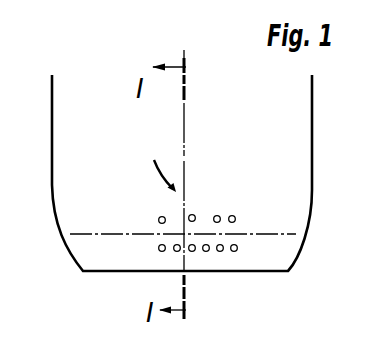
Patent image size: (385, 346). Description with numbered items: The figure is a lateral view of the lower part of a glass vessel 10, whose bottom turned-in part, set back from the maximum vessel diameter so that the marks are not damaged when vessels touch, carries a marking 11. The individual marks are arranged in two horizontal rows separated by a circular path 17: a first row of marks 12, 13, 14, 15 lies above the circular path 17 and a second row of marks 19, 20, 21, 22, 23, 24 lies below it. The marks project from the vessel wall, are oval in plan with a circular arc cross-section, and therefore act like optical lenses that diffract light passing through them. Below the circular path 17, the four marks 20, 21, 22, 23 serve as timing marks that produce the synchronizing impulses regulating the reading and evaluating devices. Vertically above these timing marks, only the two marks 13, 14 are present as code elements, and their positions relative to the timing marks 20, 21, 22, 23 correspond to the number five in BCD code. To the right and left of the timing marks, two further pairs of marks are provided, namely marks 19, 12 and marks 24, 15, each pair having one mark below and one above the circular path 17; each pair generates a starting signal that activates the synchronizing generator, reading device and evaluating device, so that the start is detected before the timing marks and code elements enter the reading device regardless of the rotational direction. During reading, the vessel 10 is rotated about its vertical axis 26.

The glass vessel 10 is at (303, 113).
The marking 11 is at (154, 163).
The mark 12 is at (159, 217).
The mark 13 is at (194, 215).
The mark 14 is at (220, 216).
The mark 15 is at (236, 218).
The circular path 17 is at (95, 233).
The mark 19 is at (158, 248).
The timing mark 20 is at (177, 252).
The timing mark 21 is at (193, 252).
The timing mark 22 is at (207, 252).
The timing mark 23 is at (222, 252).
The mark 24 is at (238, 248).
The vertical axis 26 is at (184, 57).